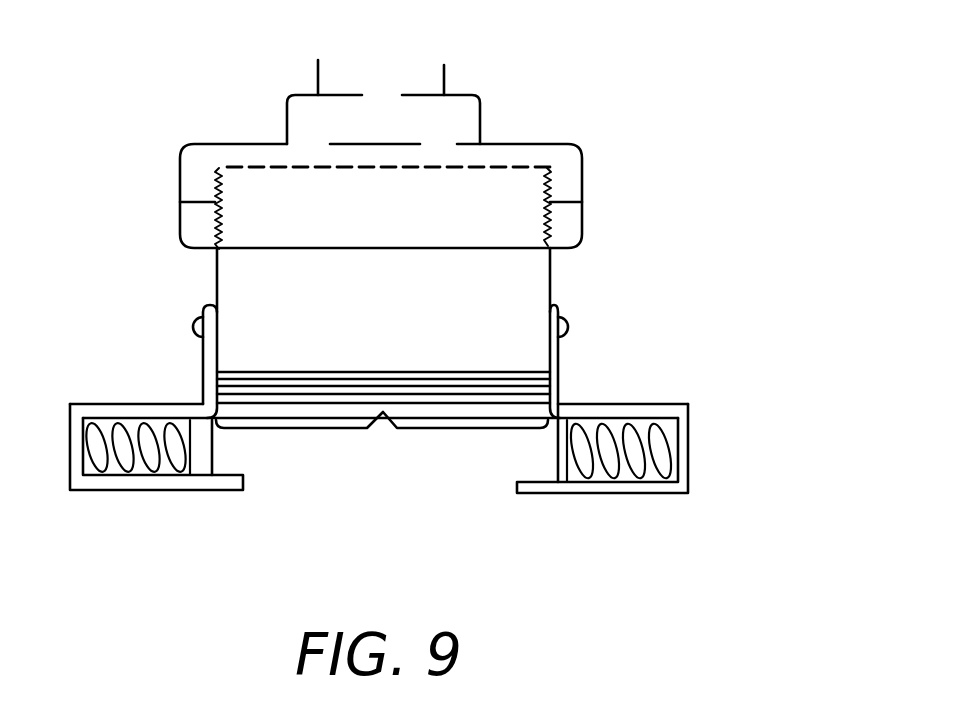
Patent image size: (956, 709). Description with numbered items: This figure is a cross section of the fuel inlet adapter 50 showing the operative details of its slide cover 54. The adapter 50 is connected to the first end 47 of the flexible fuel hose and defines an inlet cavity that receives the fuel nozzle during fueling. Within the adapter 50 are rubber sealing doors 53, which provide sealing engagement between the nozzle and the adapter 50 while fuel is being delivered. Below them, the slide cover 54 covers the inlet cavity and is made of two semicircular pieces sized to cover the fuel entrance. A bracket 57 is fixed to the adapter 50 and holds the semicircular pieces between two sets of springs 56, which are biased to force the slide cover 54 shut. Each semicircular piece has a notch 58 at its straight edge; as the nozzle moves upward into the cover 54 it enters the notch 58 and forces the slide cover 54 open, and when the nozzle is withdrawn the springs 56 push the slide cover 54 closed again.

The first end 47 is at (444, 68).
The fuel inlet adapter 50 is at (217, 282).
The sealing doors 53 is at (452, 380).
The slide cover 54 is at (457, 428).
The springs 56 is at (664, 418).
The bracket 57 is at (686, 462).
The notch 58 is at (377, 362).